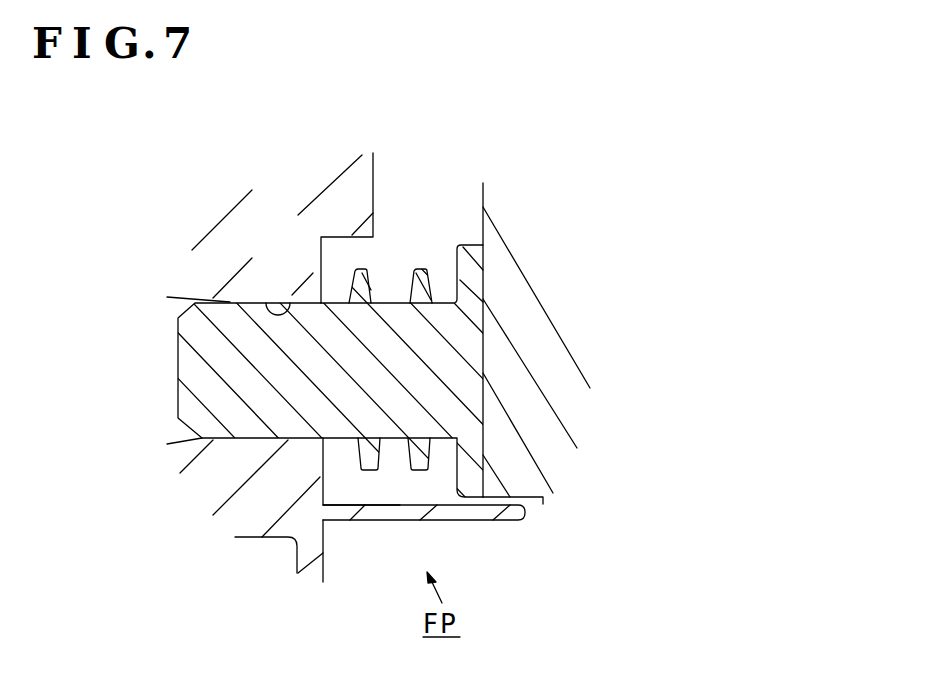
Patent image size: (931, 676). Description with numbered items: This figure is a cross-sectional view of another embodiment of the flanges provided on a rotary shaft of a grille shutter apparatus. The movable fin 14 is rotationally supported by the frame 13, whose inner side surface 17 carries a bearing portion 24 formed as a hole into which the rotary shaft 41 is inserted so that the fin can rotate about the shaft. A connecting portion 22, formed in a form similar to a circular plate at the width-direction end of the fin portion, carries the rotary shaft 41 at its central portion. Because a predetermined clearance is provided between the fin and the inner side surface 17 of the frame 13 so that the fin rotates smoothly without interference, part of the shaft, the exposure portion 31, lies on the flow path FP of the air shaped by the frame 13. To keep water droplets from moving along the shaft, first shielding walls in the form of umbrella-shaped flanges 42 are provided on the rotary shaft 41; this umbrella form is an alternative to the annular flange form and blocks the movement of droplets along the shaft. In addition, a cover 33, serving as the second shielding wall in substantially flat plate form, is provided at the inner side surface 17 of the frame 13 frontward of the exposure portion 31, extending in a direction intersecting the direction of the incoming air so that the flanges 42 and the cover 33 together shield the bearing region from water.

The rotary shaft 41 is at (178, 360).
The flanges 42 is at (428, 268).
The exposure portion 31 is at (392, 440).
The bearing portion 24 is at (287, 302).
The movable fin 14 is at (480, 187).
The connecting portion 22 is at (470, 278).
The inner side surface 17 is at (327, 560).
The frame 13 is at (248, 540).
The cover 33 is at (453, 522).